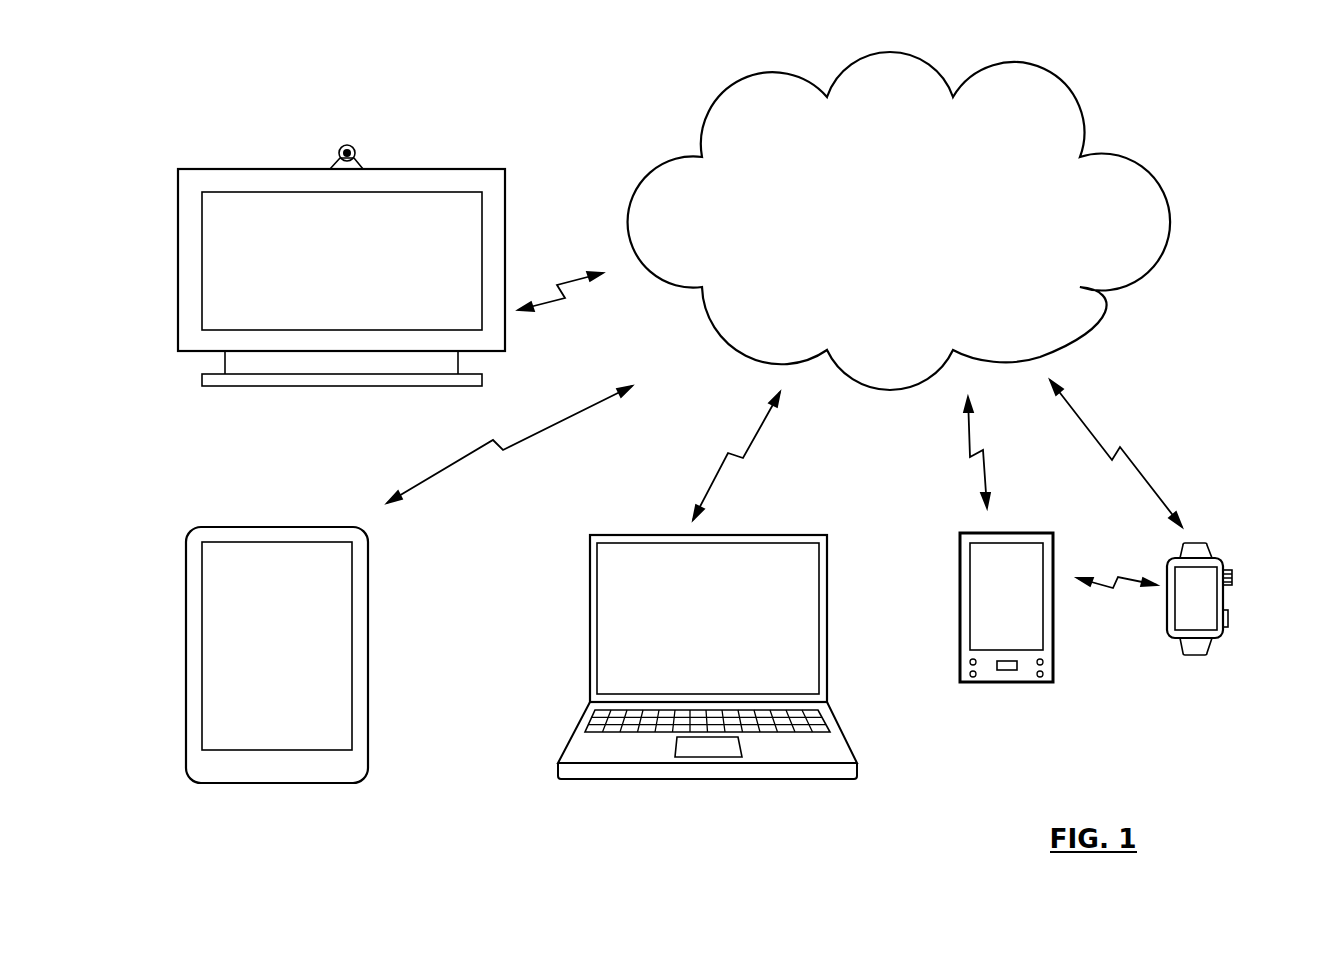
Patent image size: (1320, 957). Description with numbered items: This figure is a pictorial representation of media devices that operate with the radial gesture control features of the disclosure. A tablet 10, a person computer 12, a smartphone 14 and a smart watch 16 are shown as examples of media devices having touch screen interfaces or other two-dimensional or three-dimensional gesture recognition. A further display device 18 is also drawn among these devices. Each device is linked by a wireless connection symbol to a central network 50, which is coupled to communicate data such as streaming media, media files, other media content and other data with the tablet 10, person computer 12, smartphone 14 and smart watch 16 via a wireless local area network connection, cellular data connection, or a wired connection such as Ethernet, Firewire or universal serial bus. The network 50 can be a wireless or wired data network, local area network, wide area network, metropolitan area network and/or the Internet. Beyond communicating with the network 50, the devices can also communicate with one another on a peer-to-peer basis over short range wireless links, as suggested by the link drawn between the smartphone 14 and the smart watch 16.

The tablet 10 is at (230, 776).
The person computer 12 is at (651, 573).
The smartphone 14 is at (998, 573).
The smart watch 16 is at (1184, 613).
The television display with camera 18 is at (248, 226).
The network 50 is at (899, 221).